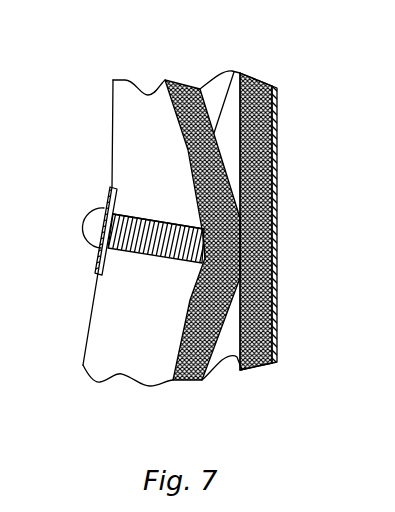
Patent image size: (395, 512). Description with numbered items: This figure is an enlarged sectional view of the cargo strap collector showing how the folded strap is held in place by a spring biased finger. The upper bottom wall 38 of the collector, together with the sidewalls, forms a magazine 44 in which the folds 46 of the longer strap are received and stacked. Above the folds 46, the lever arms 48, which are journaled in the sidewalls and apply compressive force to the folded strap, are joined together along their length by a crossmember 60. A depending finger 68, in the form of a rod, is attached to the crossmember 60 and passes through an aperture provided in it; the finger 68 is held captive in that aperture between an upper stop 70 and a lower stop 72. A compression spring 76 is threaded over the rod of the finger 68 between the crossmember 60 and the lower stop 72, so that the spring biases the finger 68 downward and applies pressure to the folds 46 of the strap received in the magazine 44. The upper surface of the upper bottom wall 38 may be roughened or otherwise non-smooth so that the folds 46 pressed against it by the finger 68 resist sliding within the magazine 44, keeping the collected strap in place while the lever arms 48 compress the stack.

The upper bottom wall 38 is at (280, 146).
The magazine 44 is at (237, 360).
The folds 46 is at (181, 79).
The lever arms 48 is at (116, 80).
The crossmember 60 is at (97, 263).
The finger 68 is at (145, 266).
The upper stop 70 is at (90, 223).
The lower stop 72 is at (196, 258).
The compression spring 76 is at (148, 215).